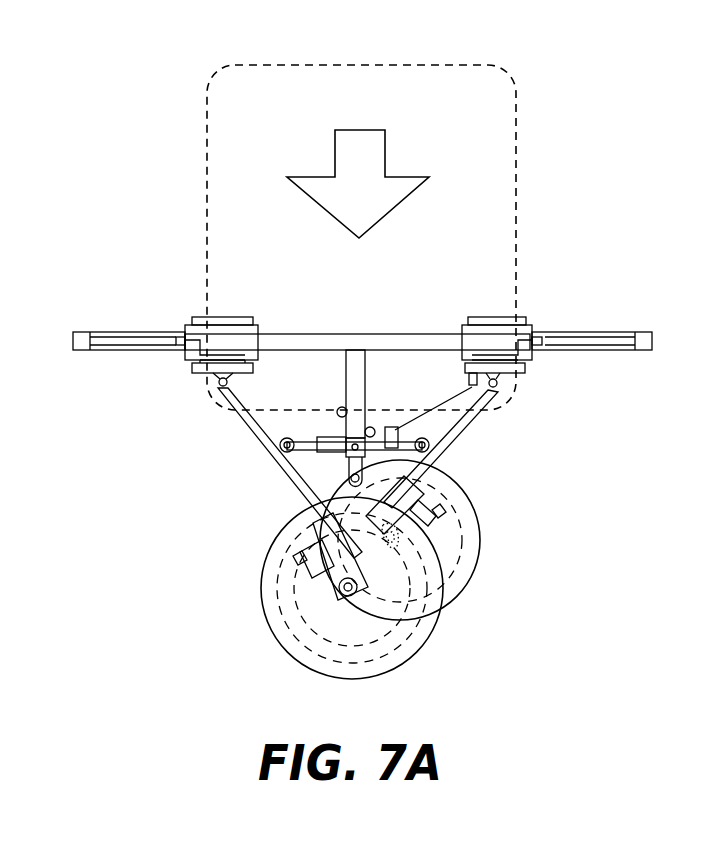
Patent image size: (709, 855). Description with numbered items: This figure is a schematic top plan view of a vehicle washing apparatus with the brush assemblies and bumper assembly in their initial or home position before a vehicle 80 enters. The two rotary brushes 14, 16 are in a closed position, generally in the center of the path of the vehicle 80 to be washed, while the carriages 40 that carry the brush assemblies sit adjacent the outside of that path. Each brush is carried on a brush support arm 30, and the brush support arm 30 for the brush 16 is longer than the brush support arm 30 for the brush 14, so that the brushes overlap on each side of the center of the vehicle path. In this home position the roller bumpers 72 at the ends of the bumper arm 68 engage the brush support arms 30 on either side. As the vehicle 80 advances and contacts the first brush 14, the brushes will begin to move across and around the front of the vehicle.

The vehicle 80 is at (518, 202).
The carriage 40 is at (253, 353).
The brush support arm 30 is at (272, 452).
The roller bumper 72 is at (285, 437).
The bumper arm 68 is at (330, 437).
The rotary brush 14 is at (480, 563).
The rotary brush 16 is at (407, 657).